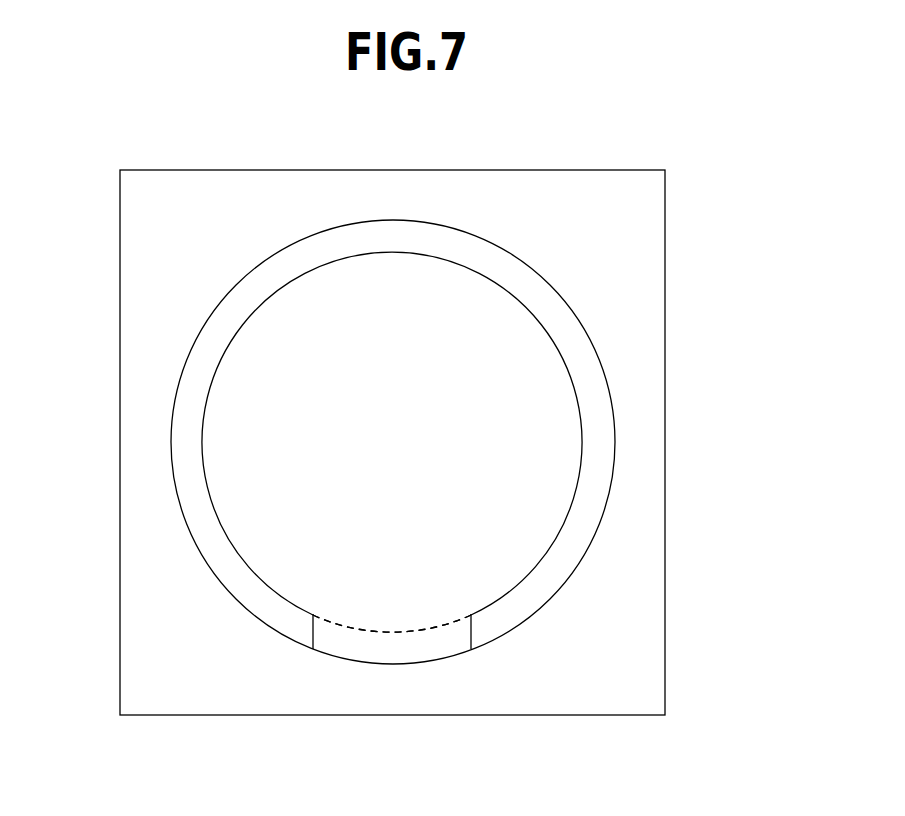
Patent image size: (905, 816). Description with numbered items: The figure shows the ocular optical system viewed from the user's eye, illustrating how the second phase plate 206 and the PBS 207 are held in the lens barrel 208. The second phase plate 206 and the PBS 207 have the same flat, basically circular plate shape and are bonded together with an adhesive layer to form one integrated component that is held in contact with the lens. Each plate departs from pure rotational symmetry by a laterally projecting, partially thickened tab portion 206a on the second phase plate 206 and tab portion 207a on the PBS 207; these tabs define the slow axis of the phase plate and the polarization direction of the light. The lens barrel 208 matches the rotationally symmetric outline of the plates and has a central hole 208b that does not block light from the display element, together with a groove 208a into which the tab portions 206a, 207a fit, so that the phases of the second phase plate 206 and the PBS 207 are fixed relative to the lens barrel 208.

The lens barrel 208 is at (390, 237).
The groove 208a is at (313, 638).
The hole 208b is at (292, 460).
The second phase plate 206 is at (510, 442).
The PBS 207 is at (525, 443).
The tab portion 206a is at (417, 697).
The tab portion 207a is at (438, 648).